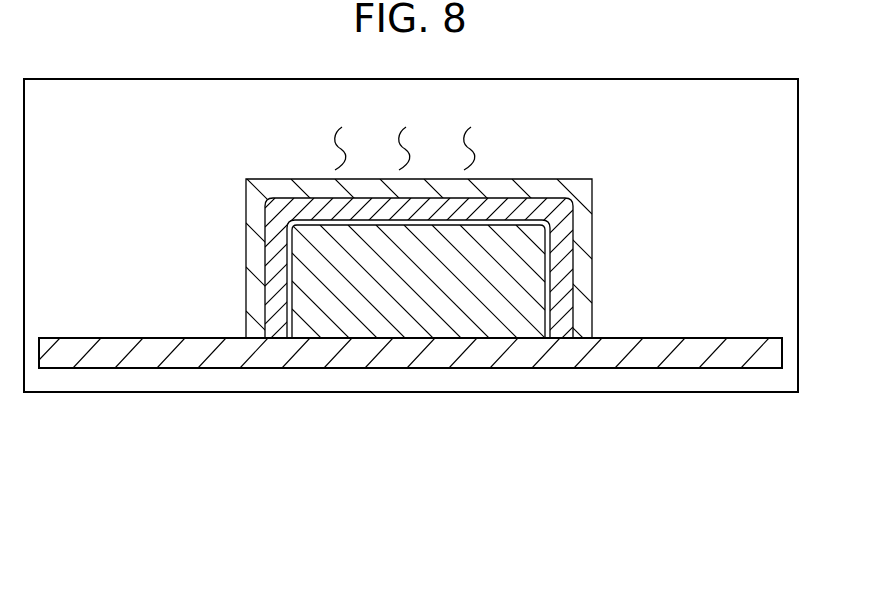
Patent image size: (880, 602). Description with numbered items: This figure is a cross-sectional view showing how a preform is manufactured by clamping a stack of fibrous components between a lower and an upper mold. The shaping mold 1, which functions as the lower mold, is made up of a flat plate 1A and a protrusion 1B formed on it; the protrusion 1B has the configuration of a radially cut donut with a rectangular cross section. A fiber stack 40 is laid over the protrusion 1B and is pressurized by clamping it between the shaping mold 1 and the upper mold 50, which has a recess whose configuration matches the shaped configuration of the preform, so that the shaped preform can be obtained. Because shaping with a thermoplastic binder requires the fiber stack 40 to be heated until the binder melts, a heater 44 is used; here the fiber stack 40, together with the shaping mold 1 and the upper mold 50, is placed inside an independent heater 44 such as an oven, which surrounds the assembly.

The shaping mold 1 is at (410, 364).
The flat plate 1A is at (445, 352).
The protrusion 1B is at (490, 318).
The fiber stack 40 is at (278, 242).
The heater 44 is at (732, 392).
The upper mold 50 is at (592, 219).